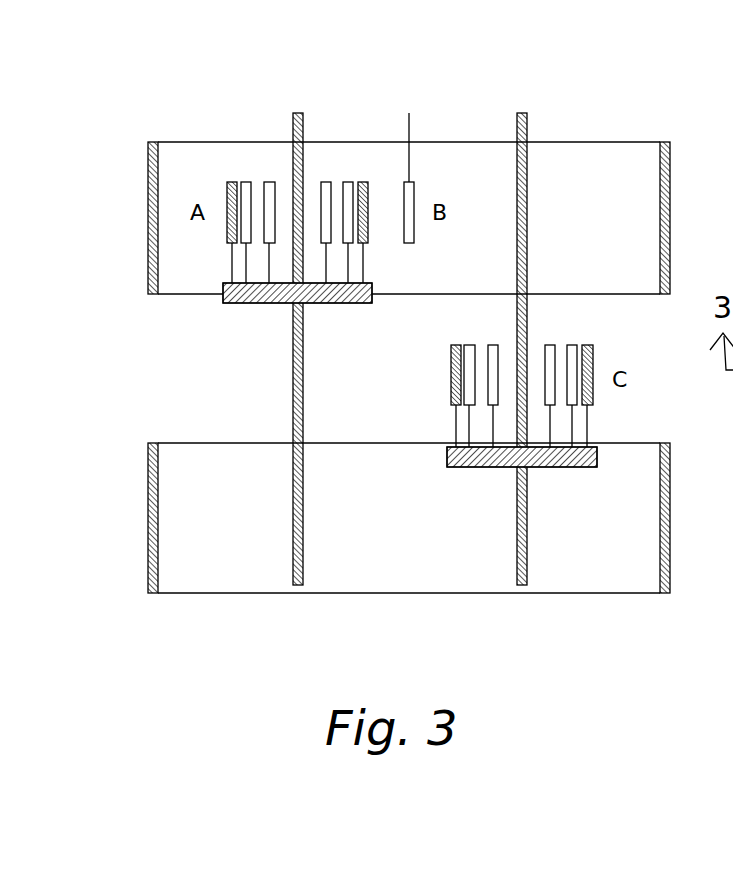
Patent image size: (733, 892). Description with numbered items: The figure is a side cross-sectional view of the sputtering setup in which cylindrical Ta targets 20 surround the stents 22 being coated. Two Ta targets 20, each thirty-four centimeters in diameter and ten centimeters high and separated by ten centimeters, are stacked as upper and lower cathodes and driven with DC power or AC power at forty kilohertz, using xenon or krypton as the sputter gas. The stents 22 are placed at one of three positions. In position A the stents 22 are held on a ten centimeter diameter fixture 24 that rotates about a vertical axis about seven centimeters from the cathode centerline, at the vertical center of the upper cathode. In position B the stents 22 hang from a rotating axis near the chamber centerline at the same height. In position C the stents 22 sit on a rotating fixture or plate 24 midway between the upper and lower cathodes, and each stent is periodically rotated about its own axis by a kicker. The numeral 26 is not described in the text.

The Ta target 20 is at (147, 293).
The stents 22 is at (472, 344).
The fixture 24 is at (253, 307).
The partition wall 26 is at (668, 188).